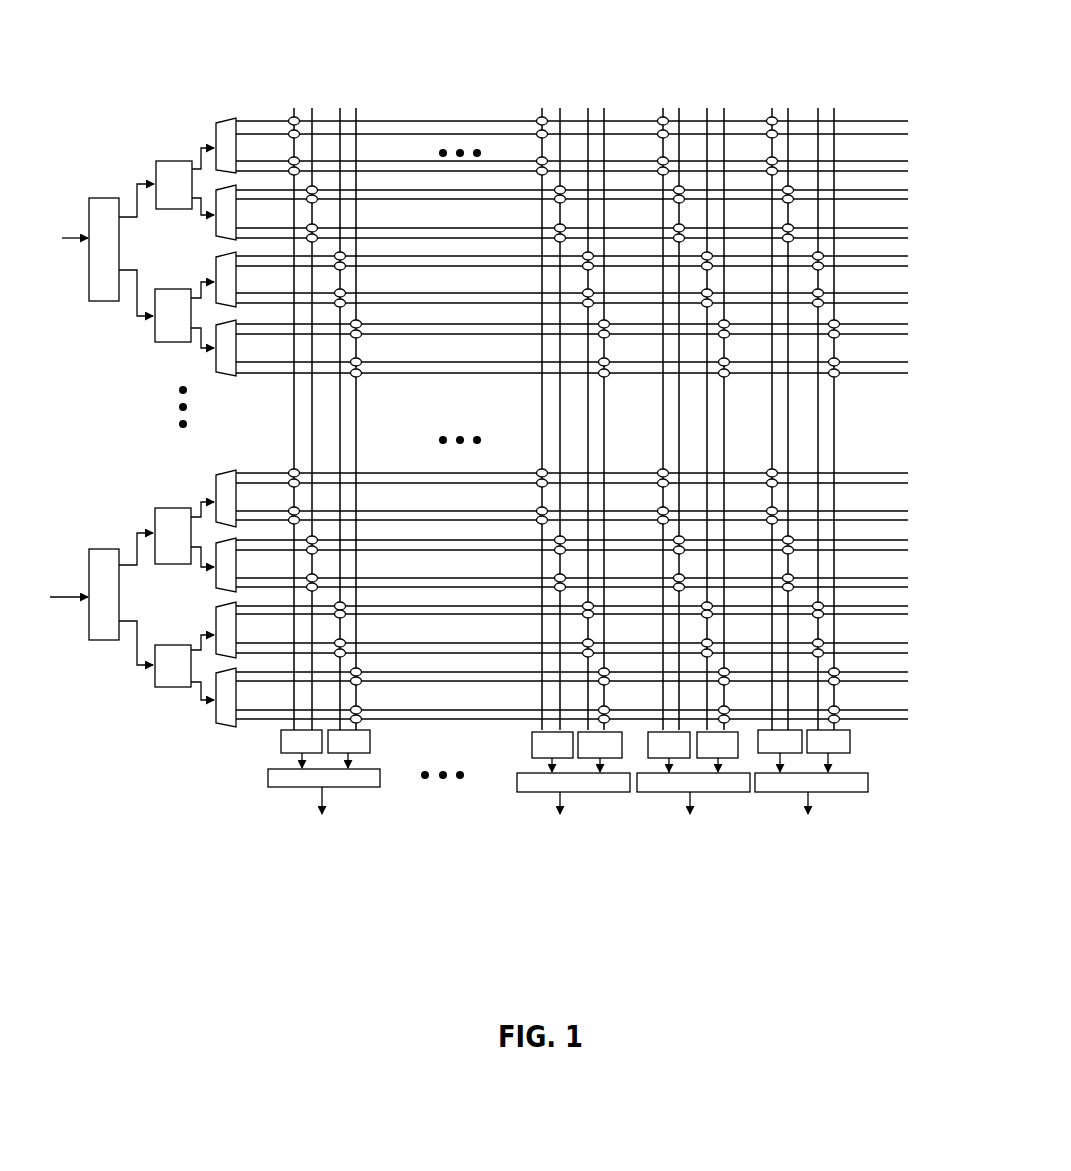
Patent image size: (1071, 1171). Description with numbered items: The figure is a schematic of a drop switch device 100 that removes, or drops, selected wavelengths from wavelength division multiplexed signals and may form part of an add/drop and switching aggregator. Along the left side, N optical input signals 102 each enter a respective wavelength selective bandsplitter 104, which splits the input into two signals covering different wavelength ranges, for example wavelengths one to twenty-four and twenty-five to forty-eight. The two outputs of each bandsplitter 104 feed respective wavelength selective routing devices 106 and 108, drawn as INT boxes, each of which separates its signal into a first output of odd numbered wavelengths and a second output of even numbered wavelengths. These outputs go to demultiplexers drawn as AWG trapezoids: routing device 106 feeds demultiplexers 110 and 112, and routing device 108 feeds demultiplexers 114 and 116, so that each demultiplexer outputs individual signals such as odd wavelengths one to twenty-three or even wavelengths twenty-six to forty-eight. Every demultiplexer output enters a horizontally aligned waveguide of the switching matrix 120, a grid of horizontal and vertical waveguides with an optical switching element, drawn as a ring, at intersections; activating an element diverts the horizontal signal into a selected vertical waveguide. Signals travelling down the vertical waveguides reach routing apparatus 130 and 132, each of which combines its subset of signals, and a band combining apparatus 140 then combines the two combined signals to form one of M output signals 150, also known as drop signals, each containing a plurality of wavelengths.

The drop switch device 100 is at (558, 993).
The optical input signal 102 is at (64, 236).
The wavelength selective bandsplitter 104 is at (100, 301).
The wavelength selective routing device 106 is at (173, 160).
The wavelength selective routing device 108 is at (173, 342).
The demultiplexer 110 is at (221, 117).
The demultiplexer 112 is at (215, 237).
The demultiplexer 114 is at (215, 262).
The demultiplexer 116 is at (225, 376).
The switching matrix 120 is at (454, 96).
The routing apparatus 130 is at (281, 745).
The routing apparatus 132 is at (370, 752).
The band combining apparatus 140 is at (358, 787).
The output signal 150 is at (318, 795).